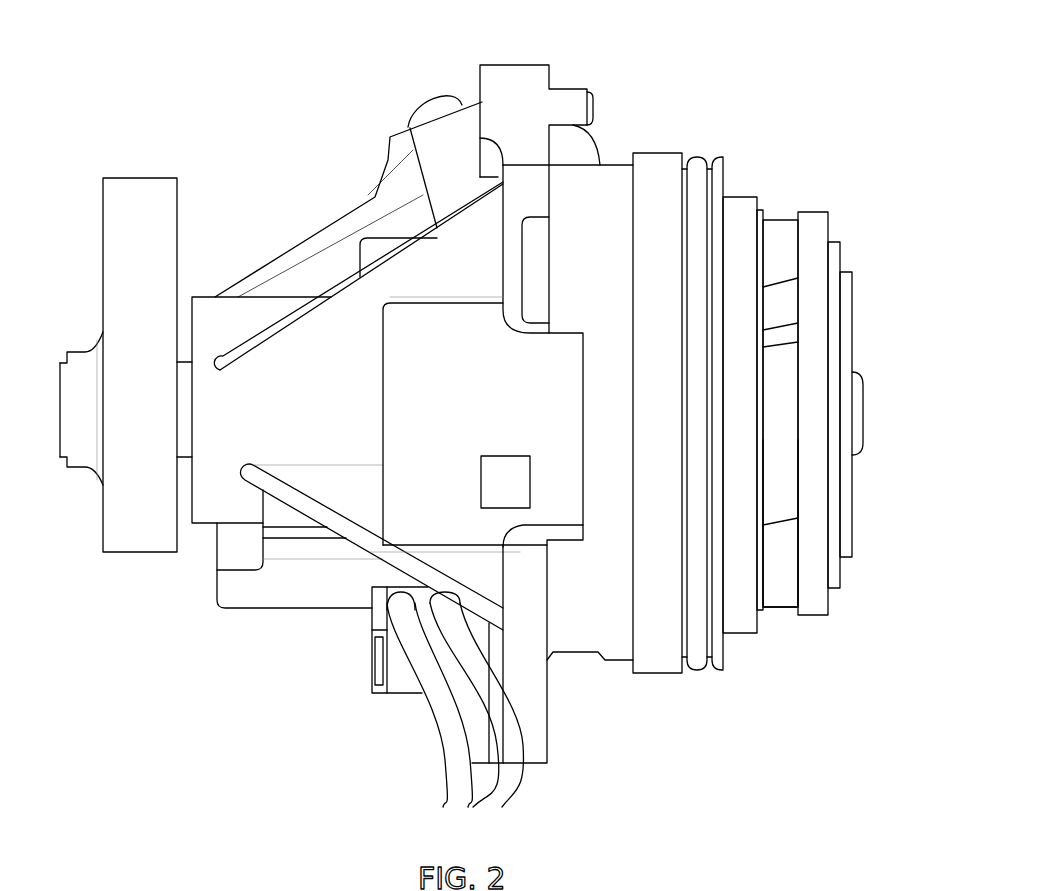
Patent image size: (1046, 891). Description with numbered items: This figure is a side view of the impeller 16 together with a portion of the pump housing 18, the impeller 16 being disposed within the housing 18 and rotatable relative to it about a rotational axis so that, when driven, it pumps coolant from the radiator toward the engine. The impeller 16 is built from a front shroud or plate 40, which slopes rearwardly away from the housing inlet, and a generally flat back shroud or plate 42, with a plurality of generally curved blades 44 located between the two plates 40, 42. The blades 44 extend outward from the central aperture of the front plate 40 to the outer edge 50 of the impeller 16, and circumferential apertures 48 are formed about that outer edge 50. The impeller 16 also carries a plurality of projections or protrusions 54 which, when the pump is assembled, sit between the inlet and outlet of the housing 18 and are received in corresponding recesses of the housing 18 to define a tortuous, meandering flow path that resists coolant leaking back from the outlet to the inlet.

The impeller 16 is at (853, 233).
The pump housing 18 is at (386, 78).
The front shroud or plate 40 is at (810, 205).
The back shroud or plate 42 is at (742, 192).
The blades 44 is at (790, 335).
The circumferential apertures 48 is at (783, 497).
The outer edge 50 is at (783, 607).
The projections or protrusions 54 is at (852, 493).